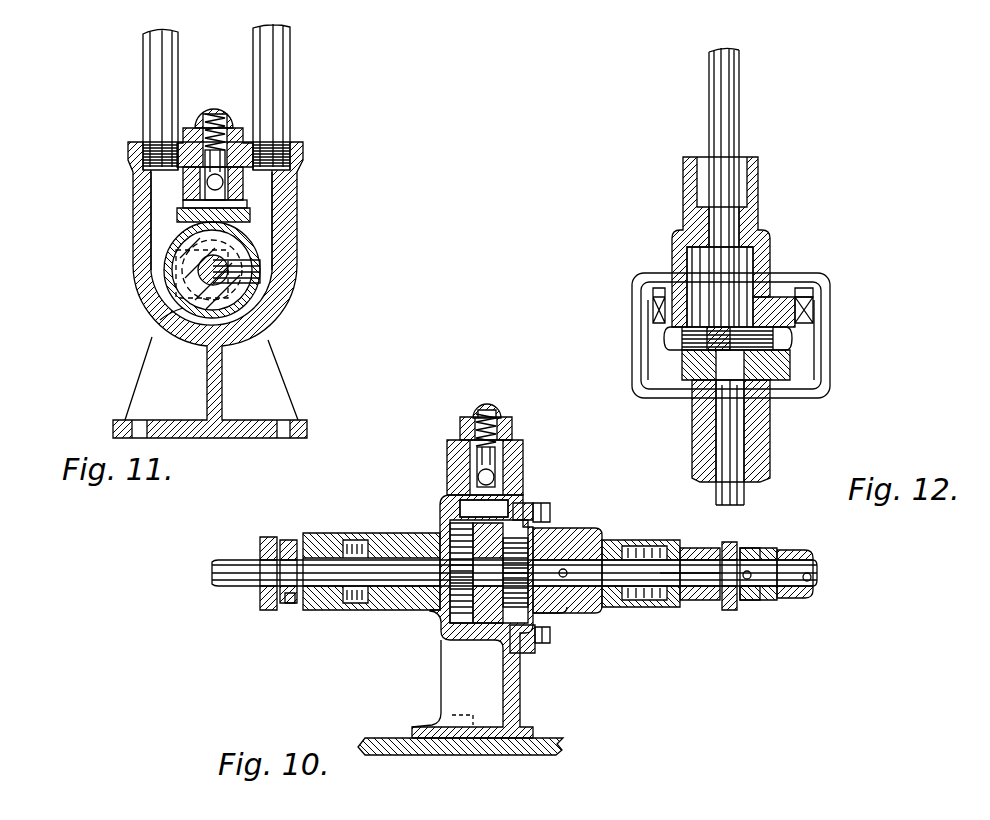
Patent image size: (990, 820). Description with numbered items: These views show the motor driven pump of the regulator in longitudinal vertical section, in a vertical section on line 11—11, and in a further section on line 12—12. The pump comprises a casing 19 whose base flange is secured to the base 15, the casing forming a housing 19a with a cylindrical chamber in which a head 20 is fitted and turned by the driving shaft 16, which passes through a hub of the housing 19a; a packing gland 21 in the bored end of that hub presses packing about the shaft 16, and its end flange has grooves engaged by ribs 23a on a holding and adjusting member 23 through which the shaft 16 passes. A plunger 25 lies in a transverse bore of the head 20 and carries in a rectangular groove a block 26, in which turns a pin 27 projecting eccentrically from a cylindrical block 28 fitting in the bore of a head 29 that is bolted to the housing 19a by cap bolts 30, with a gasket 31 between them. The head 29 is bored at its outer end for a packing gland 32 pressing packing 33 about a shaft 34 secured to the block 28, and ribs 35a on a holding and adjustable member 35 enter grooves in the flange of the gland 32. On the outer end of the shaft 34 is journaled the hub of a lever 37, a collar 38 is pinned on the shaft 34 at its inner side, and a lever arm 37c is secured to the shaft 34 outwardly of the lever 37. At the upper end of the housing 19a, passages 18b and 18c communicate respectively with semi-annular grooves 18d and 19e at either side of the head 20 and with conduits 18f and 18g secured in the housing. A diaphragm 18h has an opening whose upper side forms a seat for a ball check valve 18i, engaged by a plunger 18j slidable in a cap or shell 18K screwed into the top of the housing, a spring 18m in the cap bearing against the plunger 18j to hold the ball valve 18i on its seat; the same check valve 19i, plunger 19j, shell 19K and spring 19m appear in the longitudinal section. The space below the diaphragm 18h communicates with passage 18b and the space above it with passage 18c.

In FIG. 10, the section line 11— 11 is at (490, 403).
In FIG. 11, the section line 12— 12 is at (374, 285).
In FIG. 10, the base 15 is at (550, 738).
In FIG. 12, the driving shaft 16 is at (727, 433).
In FIG. 10, the driving shaft 16 is at (390, 563).
In FIG. 11, the passage 18b is at (157, 188).
In FIG. 11, the passage 18c is at (273, 190).
In FIG. 11, the semi-annular groove 18d is at (170, 290).
In FIG. 11, the conduit 18f is at (150, 72).
In FIG. 11, the conduit 18g is at (283, 72).
In FIG. 11, the diaphragm 18h is at (240, 202).
In FIG. 11, the check valve 18i is at (208, 182).
In FIG. 11, the plunger 18j is at (233, 153).
In FIG. 11, the cap or shell 18K is at (197, 117).
In FIG. 11, the spring 18m is at (215, 110).
In FIG. 10, the casing 19 is at (512, 670).
In FIG. 11, the housing 19a is at (273, 313).
In FIG. 10, the housing 19a is at (433, 612).
In FIG. 11, the semi-annular groove 19e is at (267, 292).
In FIG. 10, the check valve 19i is at (478, 478).
In FIG. 10, the plunger 19j is at (523, 462).
In FIG. 10, the cap or shell 19K is at (495, 413).
In FIG. 10, the spring 19m is at (512, 428).
In FIG. 12, the head 20 is at (777, 368).
In FIG. 10, the head 20 is at (458, 543).
In FIG. 10, the packing gland 21 is at (288, 542).
In FIG. 10, the holding and adjusting member 23 is at (268, 538).
In FIG. 10, the ribs 23a is at (291, 605).
In FIG. 11, the plunger 25 is at (282, 262).
In FIG. 12, the plunger 25 is at (657, 348).
In FIG. 11, the block 26 is at (183, 308).
In FIG. 12, the block 26 is at (667, 340).
In FIG. 10, the block 26 is at (350, 545).
In FIG. 12, the pin 27 is at (773, 342).
In FIG. 10, the pin 27 is at (515, 572).
In FIG. 12, the cylindrical block 28 is at (727, 262).
In FIG. 10, the cylindrical block 28 is at (567, 612).
In FIG. 12, the head 29 is at (770, 240).
In FIG. 10, the head 29 is at (553, 530).
In FIG. 12, the cap bolts 30 is at (658, 290).
In FIG. 10, the cap bolts 30 is at (532, 508).
In FIG. 12, the gasket 31 is at (812, 303).
In FIG. 10, the packing gland 32 is at (687, 550).
In FIG. 10, the packing 33 is at (636, 540).
In FIG. 10, the shaft 34 is at (690, 575).
In FIG. 10, the holding and adjustable member 35 is at (734, 541).
In FIG. 10, the ribs 35a is at (753, 548).
In FIG. 10, the lever 37 is at (767, 603).
In FIG. 10, the lever arm 37c is at (795, 600).
In FIG. 10, the collar 38 is at (747, 602).